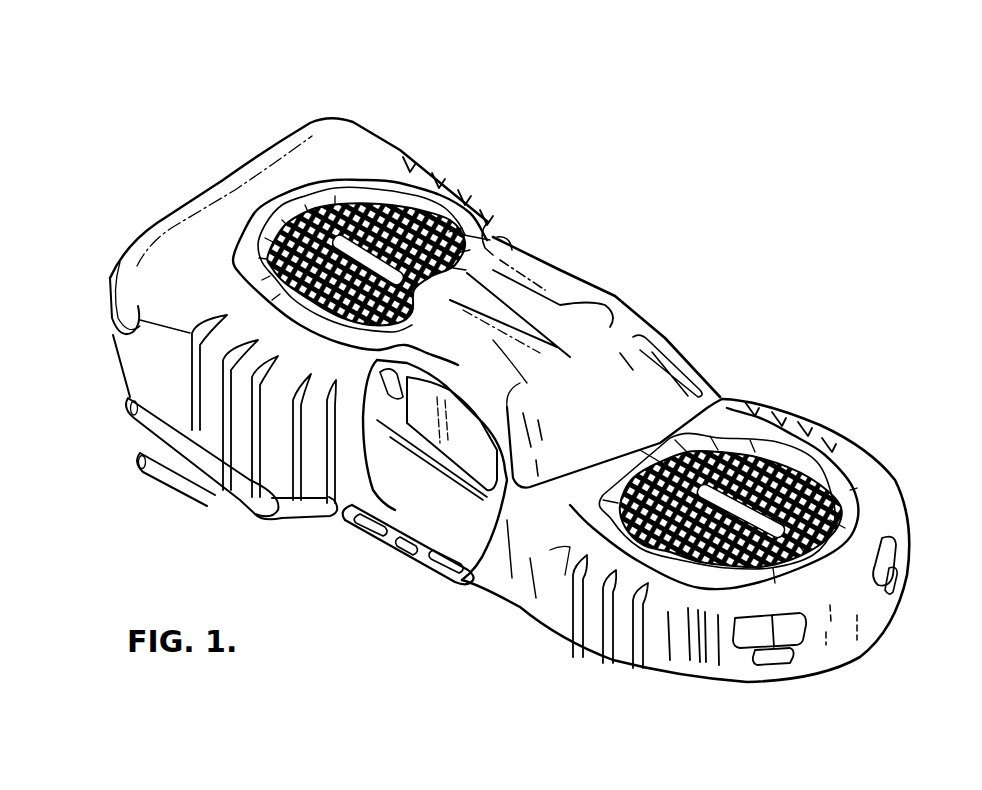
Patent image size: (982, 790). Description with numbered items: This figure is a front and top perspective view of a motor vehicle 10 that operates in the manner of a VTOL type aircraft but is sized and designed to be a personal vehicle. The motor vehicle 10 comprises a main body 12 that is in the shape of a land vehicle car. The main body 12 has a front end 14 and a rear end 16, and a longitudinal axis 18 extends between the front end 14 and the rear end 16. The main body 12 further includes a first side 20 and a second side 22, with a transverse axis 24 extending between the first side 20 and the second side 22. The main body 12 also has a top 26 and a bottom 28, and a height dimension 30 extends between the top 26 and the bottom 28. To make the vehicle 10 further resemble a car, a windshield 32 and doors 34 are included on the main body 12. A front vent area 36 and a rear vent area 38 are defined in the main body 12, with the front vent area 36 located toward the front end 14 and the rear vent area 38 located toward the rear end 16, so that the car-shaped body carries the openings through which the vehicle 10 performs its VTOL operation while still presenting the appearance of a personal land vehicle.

The motor vehicle 10 is at (708, 248).
The main body 12 is at (718, 375).
The front end 14 is at (908, 507).
The rear end 16 is at (316, 100).
The longitudinal axis 18 is at (527, 363).
The first side 20 is at (507, 583).
The second side 22 is at (593, 277).
The transverse axis 24 is at (630, 397).
The top 26 is at (523, 263).
The bottom 28 is at (587, 650).
The height dimension 30 is at (827, 643).
The windshield 32 is at (662, 340).
The doors 34 is at (437, 503).
The front vent area 36 is at (777, 457).
The rear vent area 38 is at (410, 203).